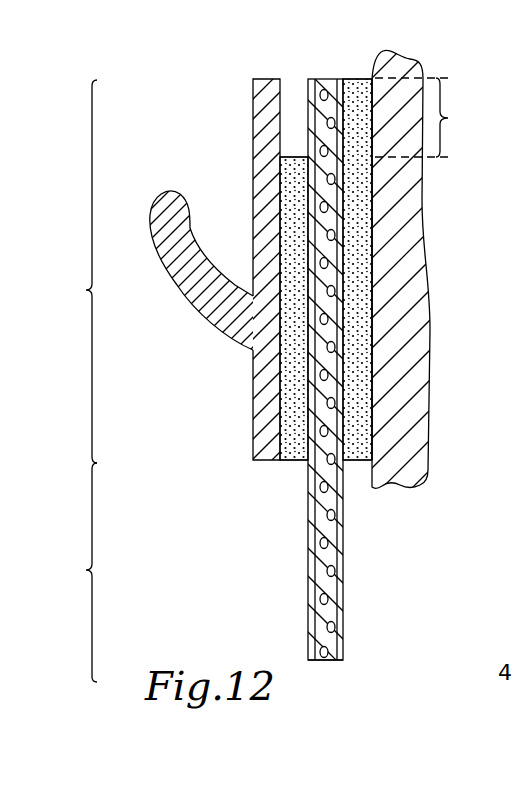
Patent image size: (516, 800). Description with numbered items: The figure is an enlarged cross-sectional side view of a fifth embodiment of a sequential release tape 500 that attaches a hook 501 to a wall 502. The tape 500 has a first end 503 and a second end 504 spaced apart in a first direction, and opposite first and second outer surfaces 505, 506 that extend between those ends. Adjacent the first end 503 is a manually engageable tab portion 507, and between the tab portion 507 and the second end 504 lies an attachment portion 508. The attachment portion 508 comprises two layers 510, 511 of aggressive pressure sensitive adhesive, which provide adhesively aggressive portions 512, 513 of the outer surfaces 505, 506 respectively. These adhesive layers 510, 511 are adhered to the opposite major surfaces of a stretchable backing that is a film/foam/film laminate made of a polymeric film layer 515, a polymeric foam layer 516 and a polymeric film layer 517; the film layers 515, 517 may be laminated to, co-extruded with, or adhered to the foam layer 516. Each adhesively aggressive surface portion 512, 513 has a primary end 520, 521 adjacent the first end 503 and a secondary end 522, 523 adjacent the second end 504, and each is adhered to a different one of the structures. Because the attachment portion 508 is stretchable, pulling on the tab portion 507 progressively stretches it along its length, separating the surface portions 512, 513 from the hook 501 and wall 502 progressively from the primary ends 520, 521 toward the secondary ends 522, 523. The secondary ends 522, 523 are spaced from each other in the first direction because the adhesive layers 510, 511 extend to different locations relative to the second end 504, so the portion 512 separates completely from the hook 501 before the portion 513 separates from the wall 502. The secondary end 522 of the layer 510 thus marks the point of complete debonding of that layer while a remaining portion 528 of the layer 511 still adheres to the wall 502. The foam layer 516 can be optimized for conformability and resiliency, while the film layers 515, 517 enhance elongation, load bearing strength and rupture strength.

The sequential release tape 500 is at (272, 525).
The hook 501 is at (180, 287).
The wall 502 is at (418, 293).
The first end 503 is at (327, 660).
The second end 504 is at (333, 83).
The first outer surface 505 is at (283, 163).
The second outer surface 506 is at (373, 250).
The tab portion 507 is at (68, 572).
The attachment portion 508 is at (68, 271).
The layer of aggressive pressure sensitive adhesive 510 is at (295, 400).
The layer of aggressive pressure sensitive adhesive 511 is at (360, 205).
The adhesively aggressive portion 512 is at (278, 222).
The adhesively aggressive portion 513 is at (372, 370).
The polymeric film layer 515 is at (310, 567).
The polymeric foam layer 516 is at (332, 565).
The polymeric film layer 517 is at (343, 618).
The primary end 520 is at (288, 462).
The primary end 521 is at (353, 462).
The secondary end 522 is at (292, 157).
The secondary end 523 is at (355, 80).
The remaining portion 528 is at (434, 117).